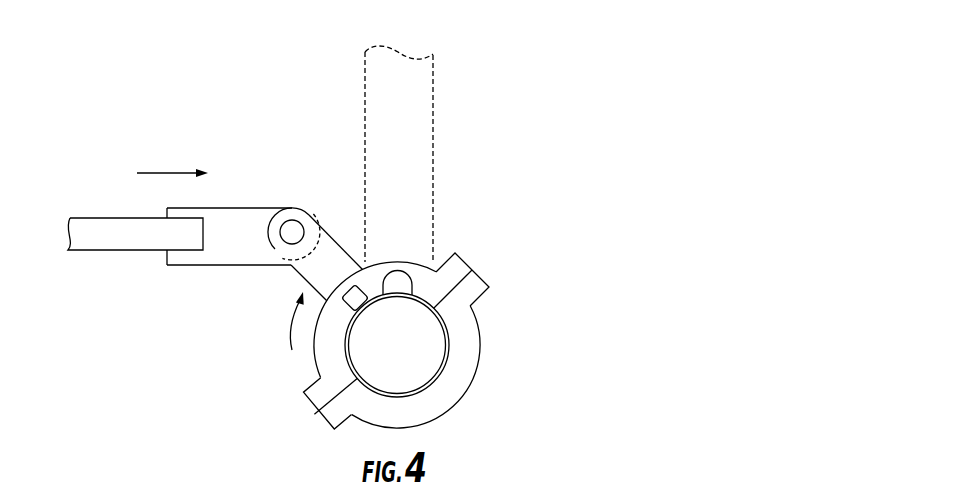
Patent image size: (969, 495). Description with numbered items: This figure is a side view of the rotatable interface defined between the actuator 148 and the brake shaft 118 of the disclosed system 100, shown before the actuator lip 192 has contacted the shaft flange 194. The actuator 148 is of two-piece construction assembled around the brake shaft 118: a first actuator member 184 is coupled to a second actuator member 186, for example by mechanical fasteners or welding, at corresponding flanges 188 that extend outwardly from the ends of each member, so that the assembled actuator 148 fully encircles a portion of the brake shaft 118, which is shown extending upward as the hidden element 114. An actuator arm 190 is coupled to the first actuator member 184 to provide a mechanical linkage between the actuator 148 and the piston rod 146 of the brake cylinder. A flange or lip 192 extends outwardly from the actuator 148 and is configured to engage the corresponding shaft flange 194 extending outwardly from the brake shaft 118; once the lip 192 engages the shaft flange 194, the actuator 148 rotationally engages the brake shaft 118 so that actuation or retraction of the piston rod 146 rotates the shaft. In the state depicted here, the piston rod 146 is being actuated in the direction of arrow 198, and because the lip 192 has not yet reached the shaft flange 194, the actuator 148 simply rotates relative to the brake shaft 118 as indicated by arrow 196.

The assembly 100 is at (143, 82).
The tube 114 is at (433, 85).
The brake shaft 118 is at (412, 363).
The piston rod 146 is at (107, 225).
The actuator 148 is at (506, 283).
The first actuator member 184 is at (327, 357).
The second actuator member 186 is at (455, 383).
The flanges 188 is at (491, 286).
The actuator arm 190 is at (320, 213).
The actuator lip 192 is at (357, 293).
The shaft flange 194 is at (402, 285).
The arrow 196 is at (290, 322).
The arrow 198 is at (165, 173).